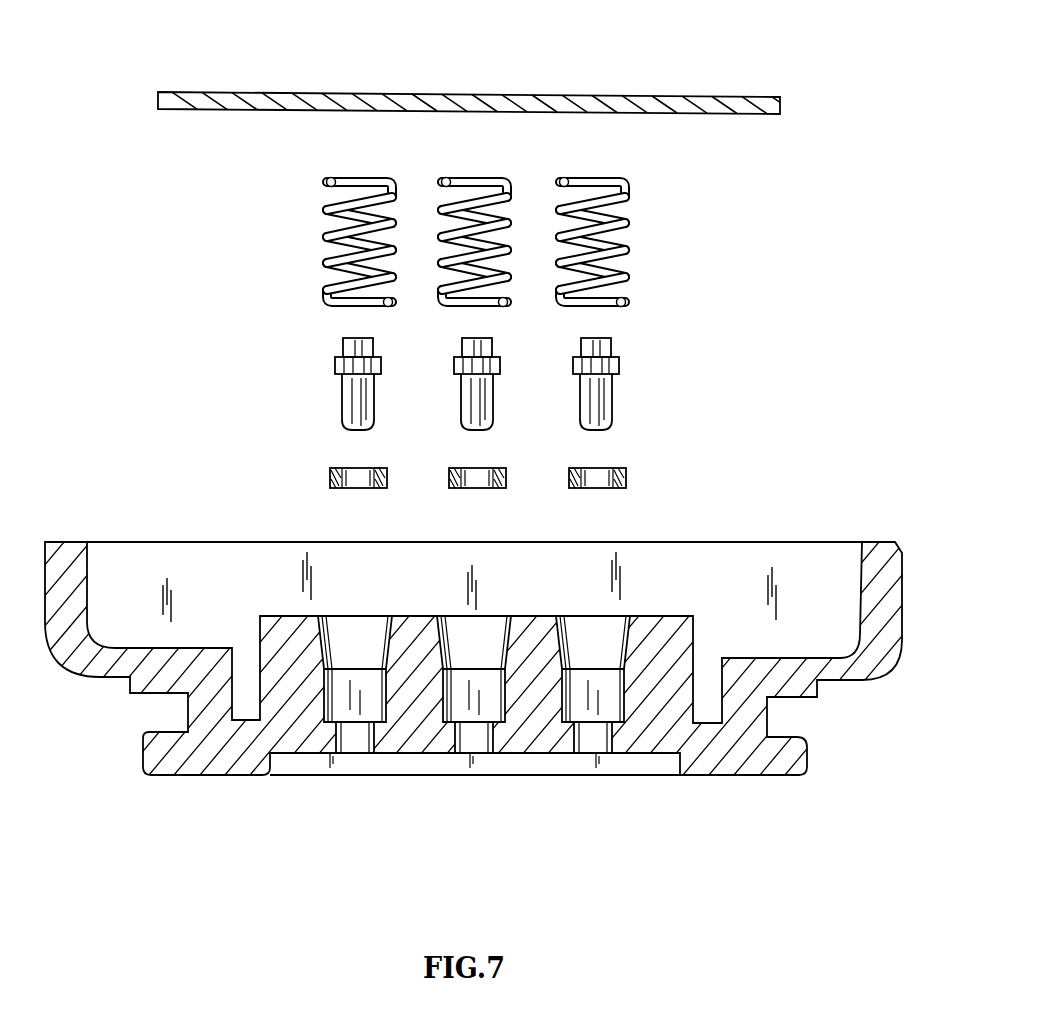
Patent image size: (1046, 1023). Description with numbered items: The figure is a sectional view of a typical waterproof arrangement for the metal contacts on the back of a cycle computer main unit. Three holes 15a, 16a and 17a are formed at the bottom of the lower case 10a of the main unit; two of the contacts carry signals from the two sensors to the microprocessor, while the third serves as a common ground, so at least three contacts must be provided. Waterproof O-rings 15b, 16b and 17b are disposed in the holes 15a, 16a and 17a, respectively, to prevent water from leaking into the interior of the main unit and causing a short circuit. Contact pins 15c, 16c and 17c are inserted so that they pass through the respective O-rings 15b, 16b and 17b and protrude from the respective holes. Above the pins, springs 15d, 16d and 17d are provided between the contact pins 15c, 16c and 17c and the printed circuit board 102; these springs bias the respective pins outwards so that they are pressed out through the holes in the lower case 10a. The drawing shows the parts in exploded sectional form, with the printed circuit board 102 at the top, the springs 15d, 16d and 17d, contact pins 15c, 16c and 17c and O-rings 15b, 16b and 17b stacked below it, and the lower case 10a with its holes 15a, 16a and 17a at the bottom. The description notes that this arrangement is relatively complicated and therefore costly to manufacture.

The printed circuit board 102 is at (710, 92).
The spring 15d is at (388, 178).
The spring 16d is at (503, 178).
The spring 17d is at (622, 178).
The contact pin 15c is at (382, 366).
The contact pin 16c is at (501, 366).
The contact pin 17c is at (620, 366).
The waterproof O-ring 15b is at (387, 476).
The waterproof O-ring 16b is at (507, 477).
The waterproof O-ring 17b is at (627, 476).
The hole 15a is at (362, 753).
The hole 16a is at (480, 753).
The hole 17a is at (603, 753).
The lower case 10a is at (523, 658).